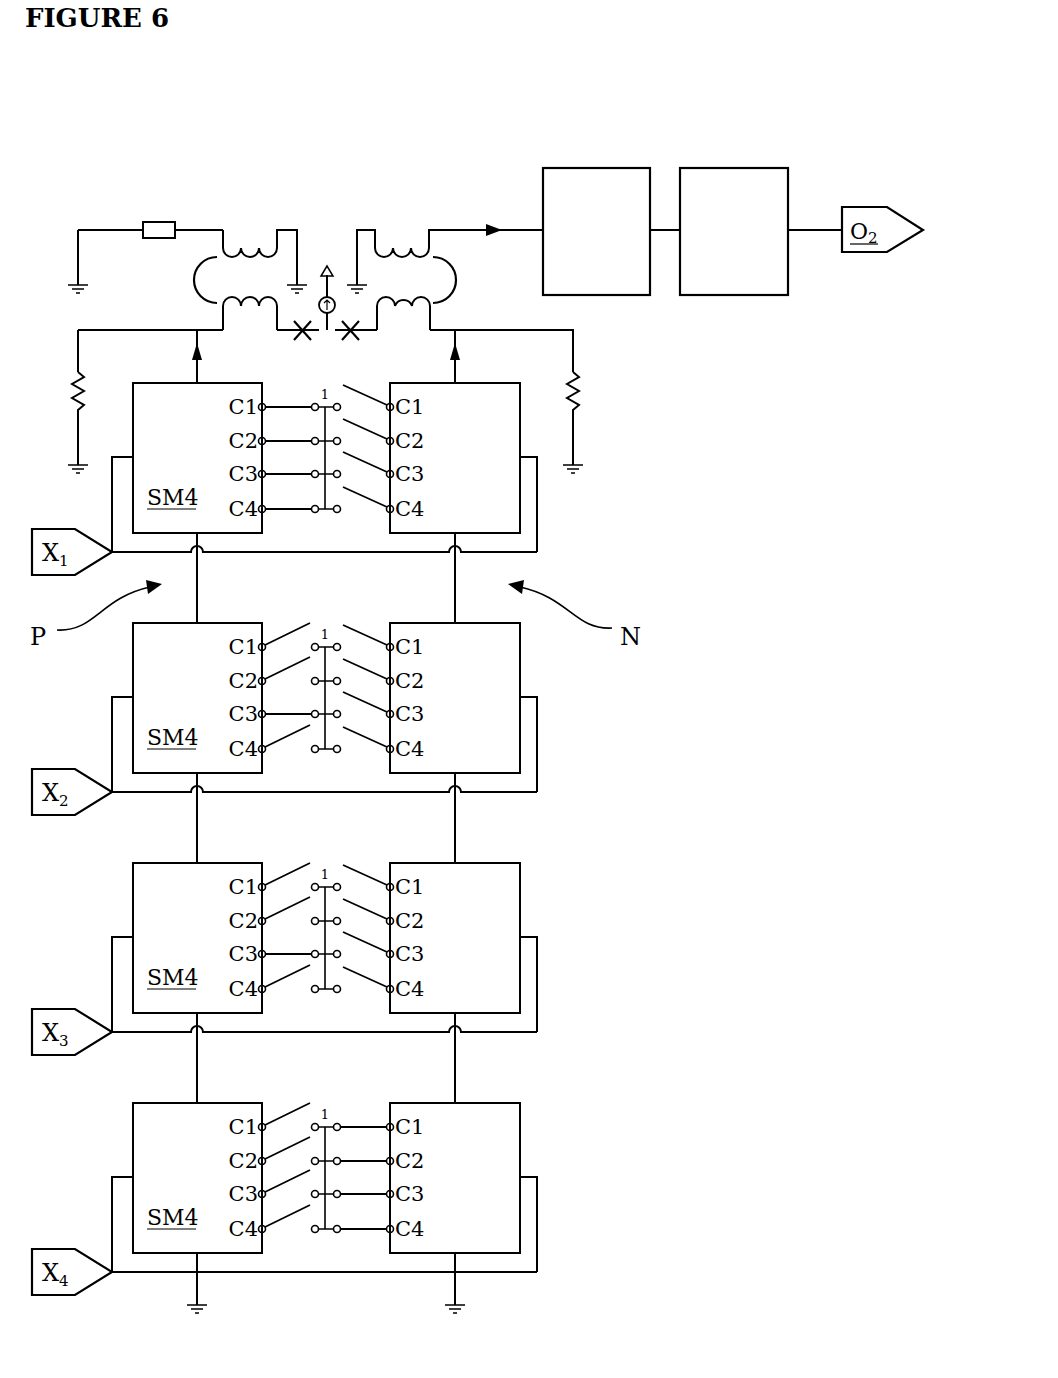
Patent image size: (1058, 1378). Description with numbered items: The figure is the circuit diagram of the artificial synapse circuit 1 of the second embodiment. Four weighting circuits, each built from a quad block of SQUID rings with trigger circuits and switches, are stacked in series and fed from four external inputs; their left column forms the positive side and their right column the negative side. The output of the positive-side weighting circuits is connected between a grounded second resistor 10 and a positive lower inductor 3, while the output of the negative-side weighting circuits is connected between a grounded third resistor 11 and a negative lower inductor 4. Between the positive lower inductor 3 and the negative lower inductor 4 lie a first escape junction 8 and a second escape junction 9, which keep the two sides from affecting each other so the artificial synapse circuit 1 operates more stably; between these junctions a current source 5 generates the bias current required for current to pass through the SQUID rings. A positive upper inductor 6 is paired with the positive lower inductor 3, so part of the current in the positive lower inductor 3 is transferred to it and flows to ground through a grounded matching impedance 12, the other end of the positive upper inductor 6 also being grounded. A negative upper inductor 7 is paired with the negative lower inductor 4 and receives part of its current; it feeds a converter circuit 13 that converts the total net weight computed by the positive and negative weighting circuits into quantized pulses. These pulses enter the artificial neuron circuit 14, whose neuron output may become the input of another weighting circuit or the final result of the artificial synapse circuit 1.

The artificial synapse circuit 1 is at (132, 142).
The positive lower inductor 3 is at (243, 312).
The negative lower inductor 4 is at (393, 312).
The current source 5 is at (327, 265).
The positive upper inductor 6 is at (252, 250).
The negative upper inductor 7 is at (405, 248).
The first escape junction 8 is at (302, 341).
The second escape junction 9 is at (353, 341).
The second resistor 10 is at (77, 410).
The third resistor 11 is at (575, 410).
The matching impedance 12 is at (157, 222).
The converter circuit 13 is at (587, 242).
The artificial neuron circuit 14 is at (720, 233).